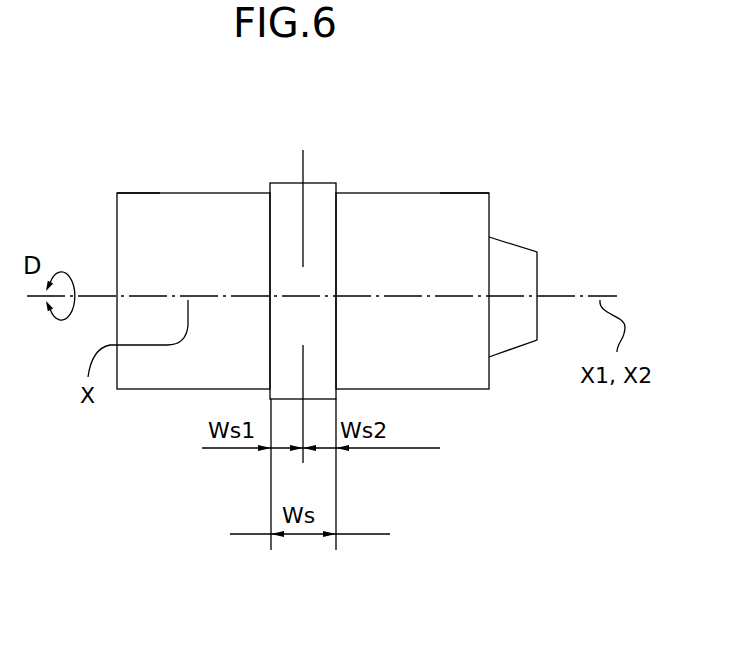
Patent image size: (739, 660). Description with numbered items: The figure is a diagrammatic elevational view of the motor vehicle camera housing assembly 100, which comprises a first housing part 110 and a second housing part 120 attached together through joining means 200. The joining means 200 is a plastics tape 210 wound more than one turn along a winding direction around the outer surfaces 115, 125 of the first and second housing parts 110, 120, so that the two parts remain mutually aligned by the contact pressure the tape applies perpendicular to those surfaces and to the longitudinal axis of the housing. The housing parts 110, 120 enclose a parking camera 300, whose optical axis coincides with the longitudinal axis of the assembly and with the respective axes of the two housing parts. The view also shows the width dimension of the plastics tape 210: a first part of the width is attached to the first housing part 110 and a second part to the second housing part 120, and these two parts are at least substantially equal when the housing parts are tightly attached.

The motor vehicle camera housing assembly 100 is at (405, 150).
The first housing part 110 is at (200, 213).
The outer surface of the first housing part 115 is at (135, 193).
The second housing part 120 is at (470, 222).
The outer surface of the second housing part 125 is at (457, 192).
The joining means 200 is at (256, 170).
The plastics tape 210 is at (320, 187).
The parking camera 300 is at (515, 252).